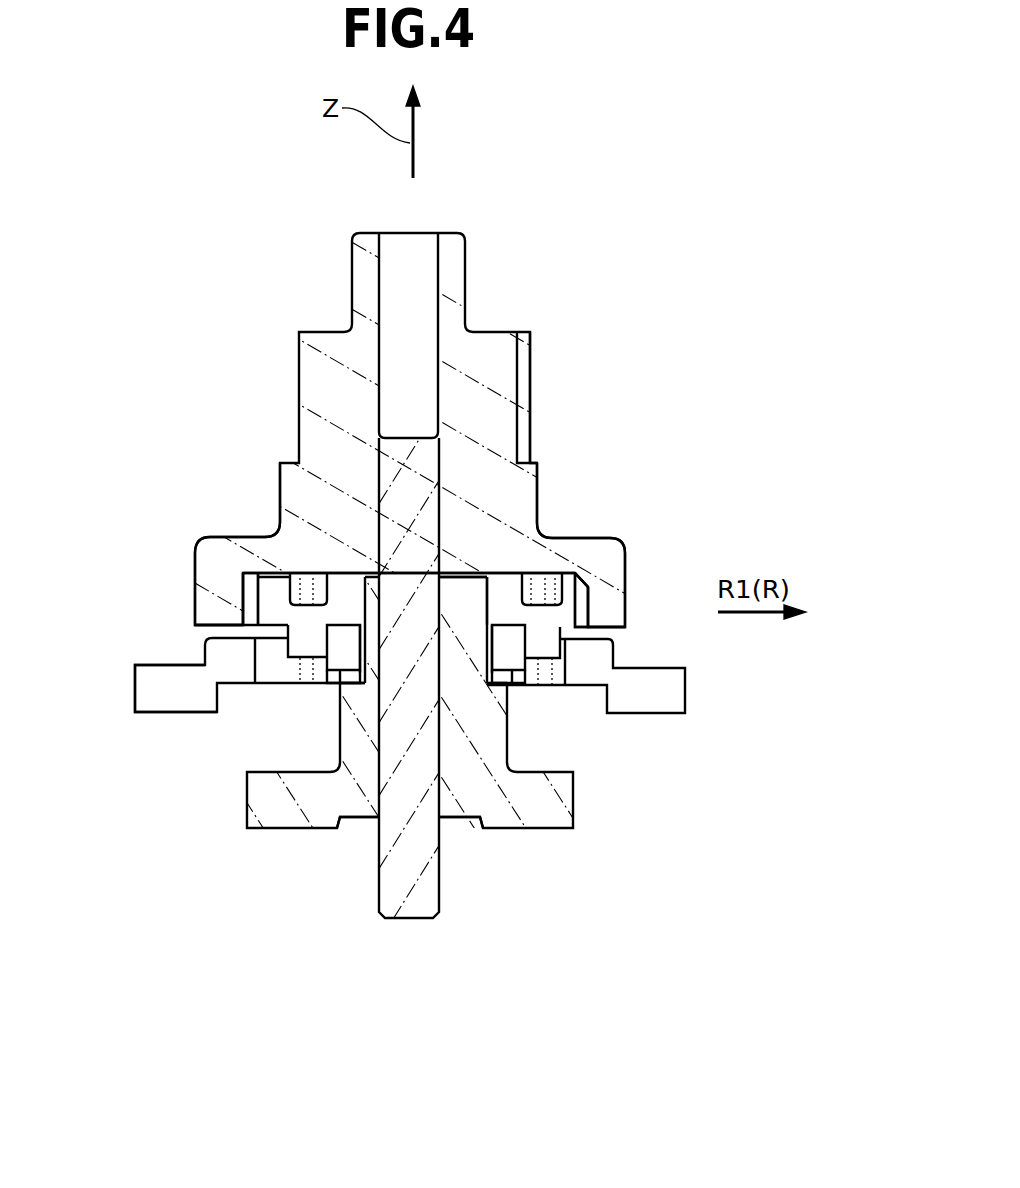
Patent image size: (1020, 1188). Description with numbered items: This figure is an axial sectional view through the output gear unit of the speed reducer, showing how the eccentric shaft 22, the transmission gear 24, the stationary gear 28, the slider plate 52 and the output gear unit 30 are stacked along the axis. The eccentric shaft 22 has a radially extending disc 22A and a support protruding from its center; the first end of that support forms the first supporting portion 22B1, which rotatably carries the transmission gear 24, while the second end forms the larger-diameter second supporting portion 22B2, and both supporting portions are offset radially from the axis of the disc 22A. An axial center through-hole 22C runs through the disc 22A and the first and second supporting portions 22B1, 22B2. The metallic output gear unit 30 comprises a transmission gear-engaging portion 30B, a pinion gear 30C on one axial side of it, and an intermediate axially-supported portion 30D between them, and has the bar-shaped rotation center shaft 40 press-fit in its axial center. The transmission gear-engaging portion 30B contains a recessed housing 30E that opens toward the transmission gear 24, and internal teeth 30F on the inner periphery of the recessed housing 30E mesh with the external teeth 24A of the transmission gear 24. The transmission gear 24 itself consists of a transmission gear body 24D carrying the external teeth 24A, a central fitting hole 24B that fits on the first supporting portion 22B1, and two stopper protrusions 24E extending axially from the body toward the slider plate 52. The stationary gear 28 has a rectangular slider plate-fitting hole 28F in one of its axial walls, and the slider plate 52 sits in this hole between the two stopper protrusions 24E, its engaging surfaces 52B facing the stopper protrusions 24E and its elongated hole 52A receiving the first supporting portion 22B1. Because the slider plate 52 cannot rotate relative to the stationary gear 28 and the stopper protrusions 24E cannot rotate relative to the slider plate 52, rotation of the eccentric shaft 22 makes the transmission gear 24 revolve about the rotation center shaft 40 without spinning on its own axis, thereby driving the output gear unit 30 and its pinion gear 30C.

The output gear unit 30 is at (466, 230).
The pinion gear 30C is at (532, 357).
The axially-supported portion 30D is at (540, 510).
The recessed housing 30E is at (343, 580).
The internal teeth 30F is at (253, 565).
The transmission gear-engaging portion 30B is at (627, 595).
The transmission gear 24 is at (572, 590).
The external teeth 24A is at (243, 598).
The fitting hole 24B is at (502, 590).
The transmission gear body 24D is at (592, 578).
The stopper protrusions 24E is at (257, 643).
The stationary gear 28 is at (692, 698).
The slider plate-fitting hole 28F is at (223, 713).
The slider plate 52 is at (327, 670).
The elongated hole 52A is at (490, 668).
The engaging surfaces 52B is at (338, 632).
The eccentric shaft 22 is at (535, 836).
The disc 22A is at (572, 808).
The first supporting portion 22B1 is at (340, 610).
The second supporting portion 22B2 is at (338, 695).
The axial center through-hole 22C is at (447, 830).
The rotation center shaft 40 is at (428, 800).